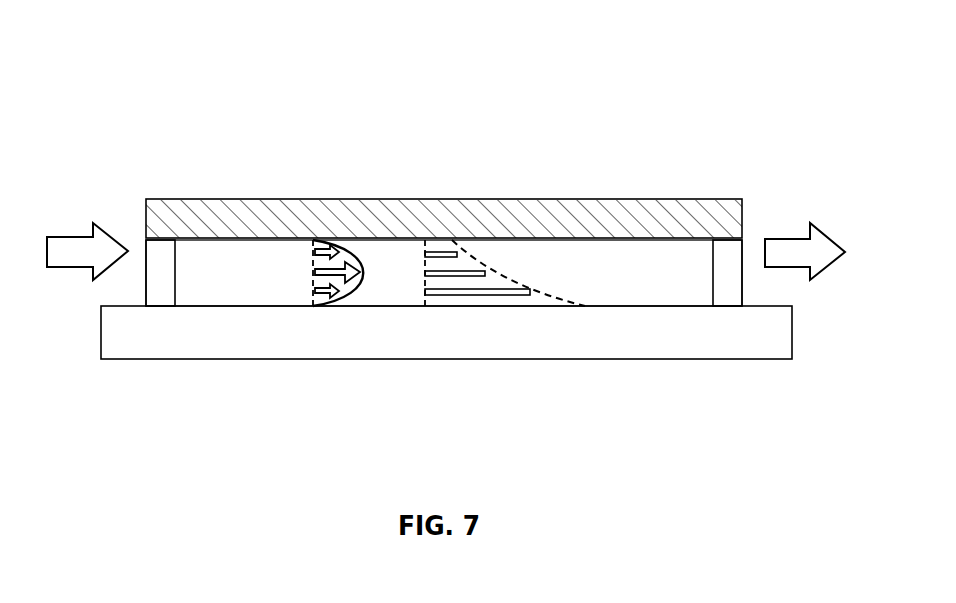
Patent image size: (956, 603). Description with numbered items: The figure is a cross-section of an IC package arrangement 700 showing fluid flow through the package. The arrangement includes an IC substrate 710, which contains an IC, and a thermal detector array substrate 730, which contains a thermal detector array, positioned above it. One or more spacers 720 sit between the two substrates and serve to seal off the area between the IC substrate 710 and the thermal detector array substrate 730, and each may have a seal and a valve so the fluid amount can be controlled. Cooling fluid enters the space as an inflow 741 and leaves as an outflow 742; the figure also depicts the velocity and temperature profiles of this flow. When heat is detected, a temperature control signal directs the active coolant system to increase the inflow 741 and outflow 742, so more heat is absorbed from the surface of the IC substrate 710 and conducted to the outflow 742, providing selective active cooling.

The IC package arrangement 700 is at (444, 166).
The IC substrate 710 is at (590, 360).
The spacers 720 is at (146, 282).
The thermal detector array substrate 730 is at (604, 199).
The inflow 741 is at (70, 235).
The outflow 742 is at (790, 238).